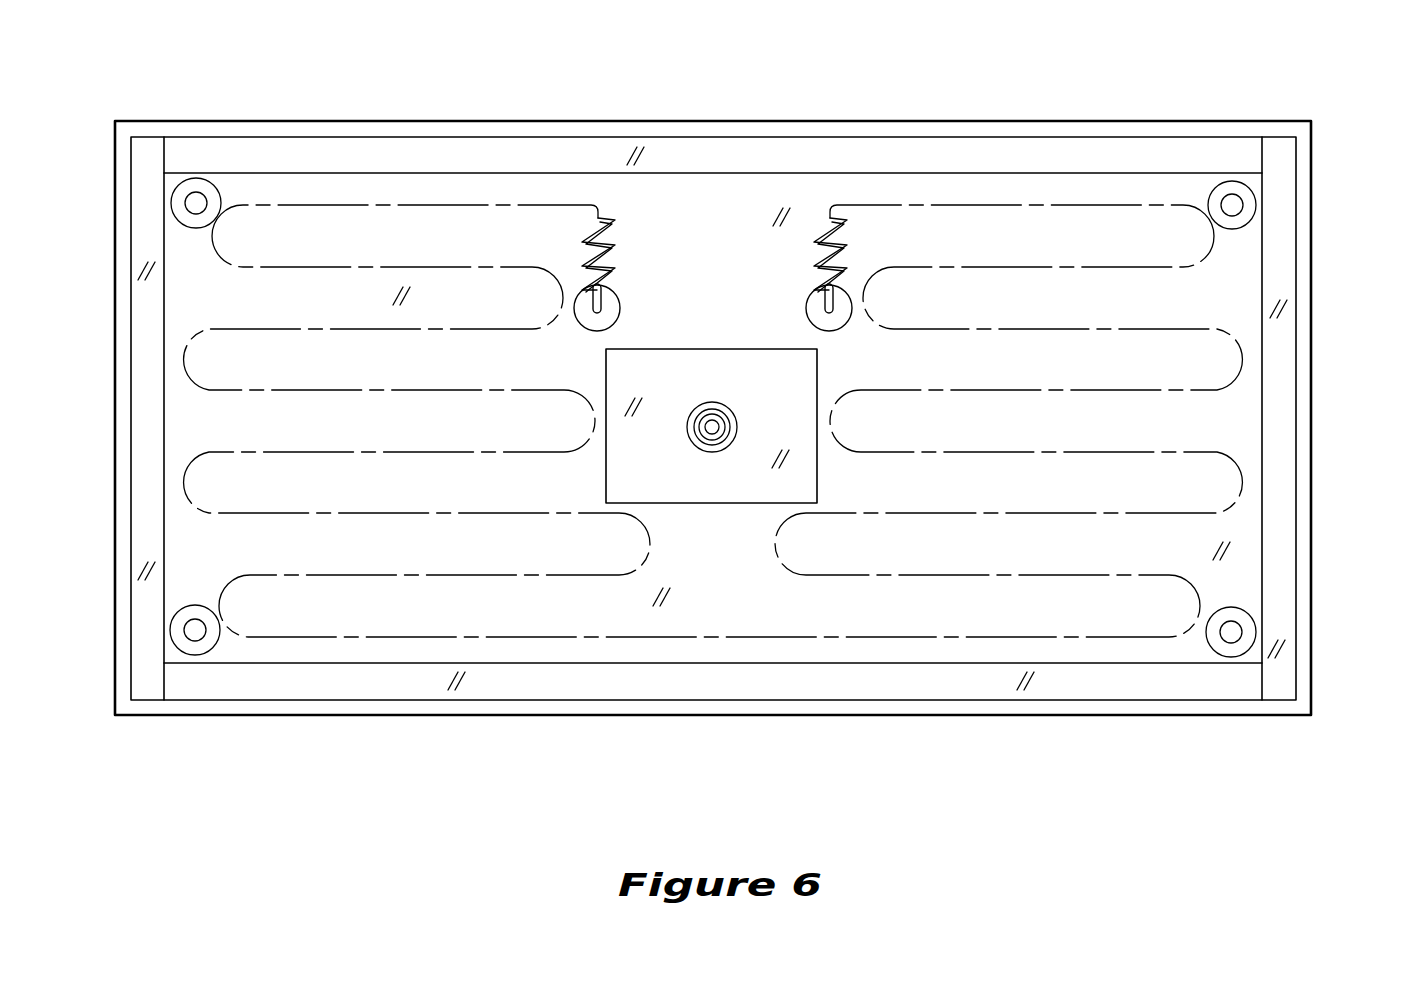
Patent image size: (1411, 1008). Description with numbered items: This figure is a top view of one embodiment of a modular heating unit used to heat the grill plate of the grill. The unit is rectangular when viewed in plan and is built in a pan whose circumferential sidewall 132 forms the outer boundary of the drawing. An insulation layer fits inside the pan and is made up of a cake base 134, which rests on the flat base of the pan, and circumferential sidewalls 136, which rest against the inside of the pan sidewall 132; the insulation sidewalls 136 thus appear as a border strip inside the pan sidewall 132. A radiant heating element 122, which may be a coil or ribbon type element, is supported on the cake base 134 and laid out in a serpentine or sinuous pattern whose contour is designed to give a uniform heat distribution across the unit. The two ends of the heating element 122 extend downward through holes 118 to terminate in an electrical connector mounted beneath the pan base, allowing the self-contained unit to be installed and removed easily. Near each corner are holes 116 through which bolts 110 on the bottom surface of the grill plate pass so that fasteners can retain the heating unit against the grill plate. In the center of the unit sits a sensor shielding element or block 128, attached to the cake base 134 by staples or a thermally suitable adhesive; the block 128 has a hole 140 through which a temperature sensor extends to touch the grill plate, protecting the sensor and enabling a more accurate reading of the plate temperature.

The bolts 110 is at (186, 194).
The holes 116 is at (220, 182).
The holes 118 is at (805, 300).
The heating element 122 is at (430, 204).
The sensor shielding element or block 128 is at (688, 387).
The circumferential sidewall 132 is at (962, 708).
The cake base 134 is at (1242, 420).
The circumferential sidewalls 136 is at (1280, 470).
The hole 140 is at (705, 452).